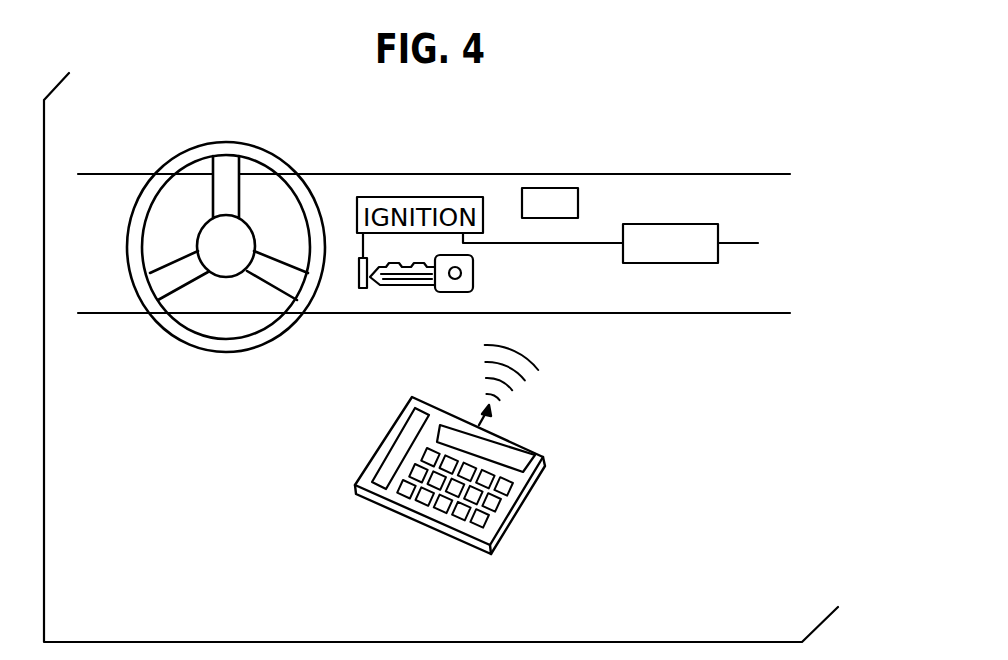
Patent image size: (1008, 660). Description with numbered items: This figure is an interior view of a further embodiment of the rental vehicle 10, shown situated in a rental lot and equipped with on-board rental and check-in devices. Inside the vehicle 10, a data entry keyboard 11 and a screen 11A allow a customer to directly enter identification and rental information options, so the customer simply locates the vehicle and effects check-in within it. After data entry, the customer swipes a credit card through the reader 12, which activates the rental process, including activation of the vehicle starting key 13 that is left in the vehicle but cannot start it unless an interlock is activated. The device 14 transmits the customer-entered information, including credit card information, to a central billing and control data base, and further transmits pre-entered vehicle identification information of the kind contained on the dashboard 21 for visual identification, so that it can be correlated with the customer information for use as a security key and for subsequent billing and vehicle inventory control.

The rental vehicle 10 is at (336, 147).
The data entry keyboard 11 is at (452, 469).
The screen 11A is at (507, 453).
The reader 12 is at (393, 455).
The vehicle starting key 13 is at (455, 292).
The device 14 is at (683, 235).
The dashboard 21 is at (557, 197).